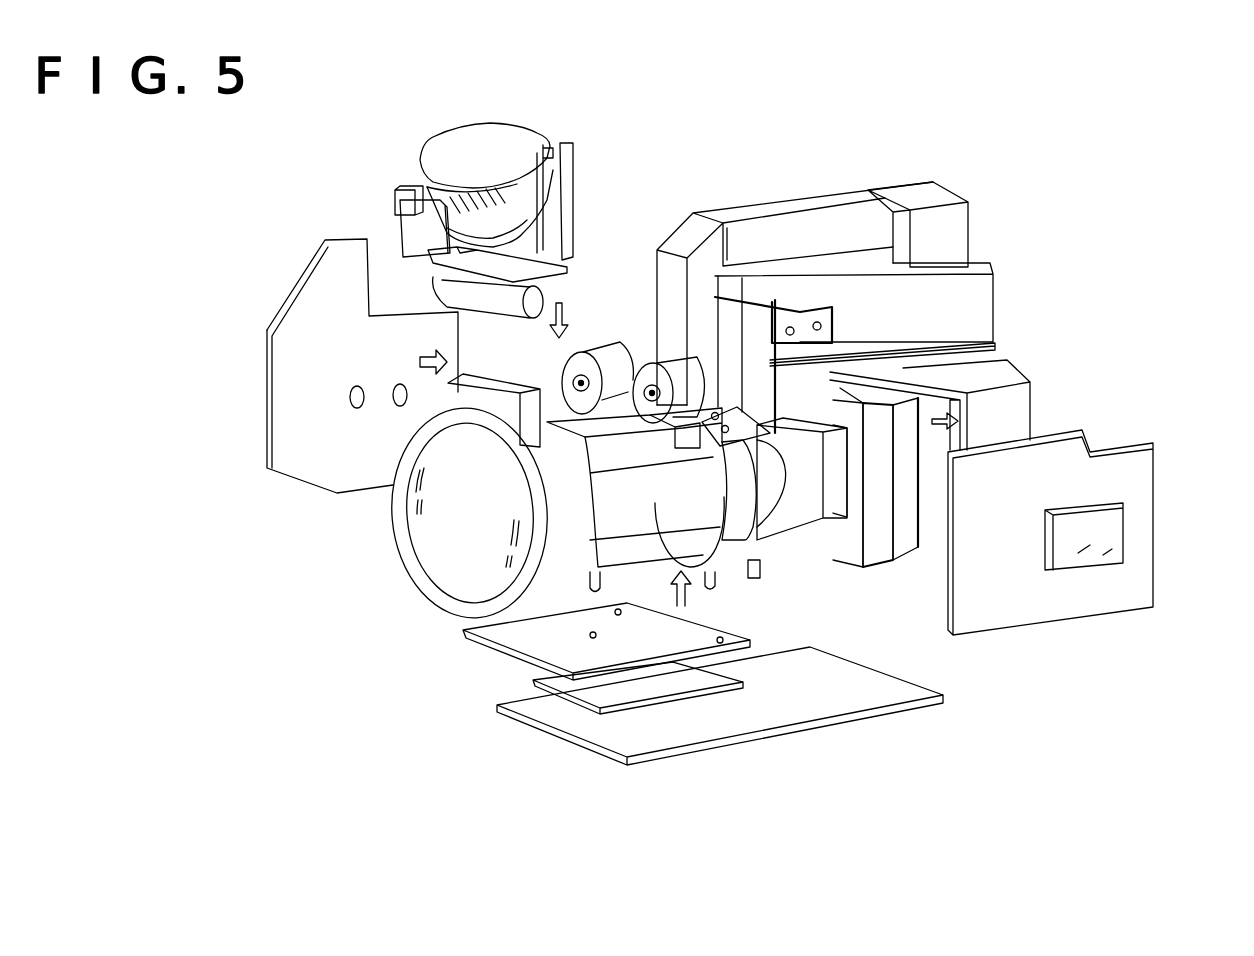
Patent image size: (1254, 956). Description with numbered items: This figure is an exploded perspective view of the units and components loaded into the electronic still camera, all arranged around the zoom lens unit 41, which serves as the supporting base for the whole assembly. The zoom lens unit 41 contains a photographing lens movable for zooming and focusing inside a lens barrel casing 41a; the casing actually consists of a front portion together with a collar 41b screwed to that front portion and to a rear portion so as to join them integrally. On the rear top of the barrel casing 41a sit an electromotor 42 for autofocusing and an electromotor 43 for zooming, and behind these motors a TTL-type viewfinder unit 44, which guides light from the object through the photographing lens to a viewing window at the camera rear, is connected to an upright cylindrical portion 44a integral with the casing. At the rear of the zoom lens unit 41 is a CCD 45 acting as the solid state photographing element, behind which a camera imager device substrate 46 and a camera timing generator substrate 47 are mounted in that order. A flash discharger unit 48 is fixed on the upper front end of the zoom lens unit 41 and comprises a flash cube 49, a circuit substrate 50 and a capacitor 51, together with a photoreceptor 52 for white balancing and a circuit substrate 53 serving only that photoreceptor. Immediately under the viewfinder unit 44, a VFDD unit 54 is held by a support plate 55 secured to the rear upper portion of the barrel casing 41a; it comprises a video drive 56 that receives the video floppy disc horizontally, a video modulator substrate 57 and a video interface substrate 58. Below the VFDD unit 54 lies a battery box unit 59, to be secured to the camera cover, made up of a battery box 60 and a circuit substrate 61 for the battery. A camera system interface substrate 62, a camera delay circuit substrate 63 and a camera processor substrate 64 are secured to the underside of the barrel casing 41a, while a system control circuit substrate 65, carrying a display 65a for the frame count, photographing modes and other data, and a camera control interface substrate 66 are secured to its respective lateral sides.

The zoom lens unit 41 is at (400, 572).
The lens barrel casing 41a is at (702, 565).
The collar 41b is at (733, 517).
The electromotor for autofocusing 42 is at (640, 362).
The electromotor for zooming 43 is at (562, 360).
The viewfinder unit 44 is at (818, 233).
The upright cylindrical portion 44a is at (675, 300).
The CCD 45 is at (813, 503).
The camera imager device substrate 46 is at (840, 537).
The camera timing generator substrate 47 is at (907, 495).
The flash discharger unit 48 is at (548, 129).
The flash cube 49 is at (460, 152).
The circuit substrate 50 is at (565, 240).
The capacitor 51 is at (463, 291).
The photoreceptor for white balancing 52 is at (397, 203).
The circuit substrate for photoreceptor 53 is at (413, 238).
The VFDD unit 54 is at (1022, 263).
The support plate 55 is at (743, 220).
The video drive 56 is at (980, 303).
The video modulator substrate 57 is at (923, 240).
The video interface substrate 58 is at (980, 347).
The battery box unit 59 is at (1037, 412).
The battery box 60 is at (983, 378).
The circuit substrate for battery 61 is at (948, 403).
The camera system interface substrate 62 is at (530, 640).
The camera delay circuit substrate 63 is at (593, 688).
The camera processor substrate 64 is at (727, 713).
The system control circuit substrate 65 is at (1060, 600).
The display 65a is at (1110, 540).
The camera control interface substrate 66 is at (310, 393).